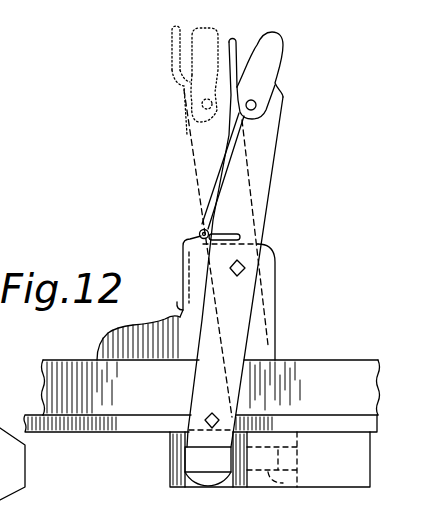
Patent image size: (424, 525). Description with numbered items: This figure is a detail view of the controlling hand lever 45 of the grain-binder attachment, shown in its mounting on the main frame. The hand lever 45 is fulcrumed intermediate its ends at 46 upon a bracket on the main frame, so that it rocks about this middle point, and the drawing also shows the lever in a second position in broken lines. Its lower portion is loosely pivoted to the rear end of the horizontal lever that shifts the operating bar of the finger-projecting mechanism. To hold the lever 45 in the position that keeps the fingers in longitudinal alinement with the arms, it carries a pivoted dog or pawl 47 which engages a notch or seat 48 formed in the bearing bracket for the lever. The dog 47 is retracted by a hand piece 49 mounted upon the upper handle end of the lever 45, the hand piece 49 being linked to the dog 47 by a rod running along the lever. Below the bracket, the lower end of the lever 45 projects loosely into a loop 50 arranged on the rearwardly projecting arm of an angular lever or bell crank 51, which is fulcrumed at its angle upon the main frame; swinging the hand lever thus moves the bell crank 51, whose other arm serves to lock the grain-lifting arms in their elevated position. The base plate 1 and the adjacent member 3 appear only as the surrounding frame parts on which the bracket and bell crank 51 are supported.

The plate 1 is at (333, 370).
The base member 3 is at (2, 388).
The controlling hand lever 45 is at (252, 193).
The fulcrum 46 is at (244, 270).
The pivoted dog or pawl 47 is at (189, 234).
The notch or seat 48 is at (172, 317).
The hand piece 49 is at (228, 68).
The loop 50 is at (203, 461).
The angular lever or bell crank 51 is at (353, 478).